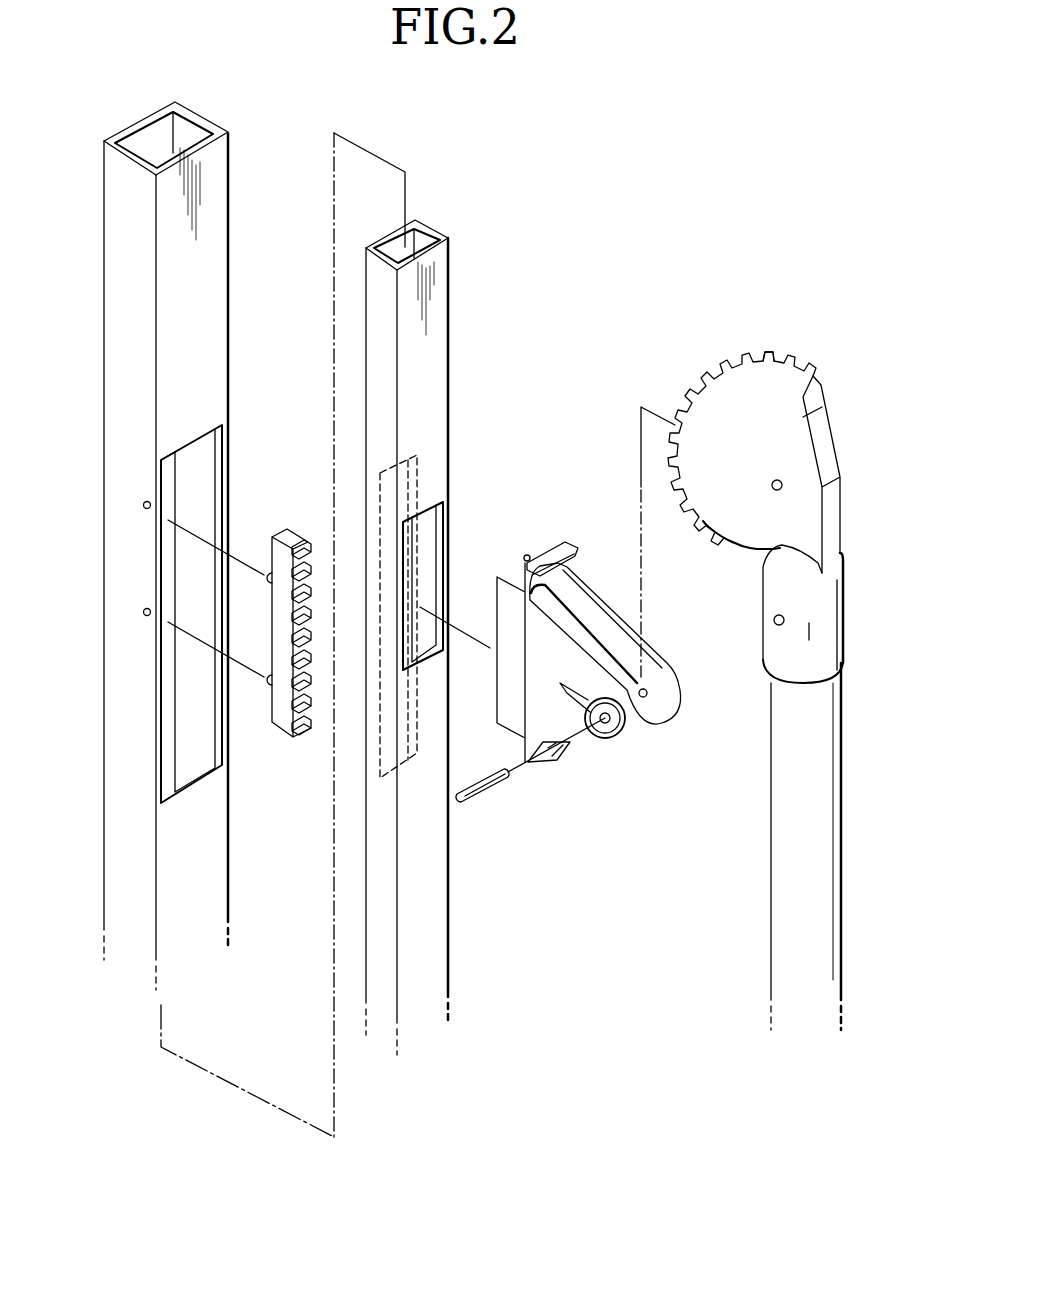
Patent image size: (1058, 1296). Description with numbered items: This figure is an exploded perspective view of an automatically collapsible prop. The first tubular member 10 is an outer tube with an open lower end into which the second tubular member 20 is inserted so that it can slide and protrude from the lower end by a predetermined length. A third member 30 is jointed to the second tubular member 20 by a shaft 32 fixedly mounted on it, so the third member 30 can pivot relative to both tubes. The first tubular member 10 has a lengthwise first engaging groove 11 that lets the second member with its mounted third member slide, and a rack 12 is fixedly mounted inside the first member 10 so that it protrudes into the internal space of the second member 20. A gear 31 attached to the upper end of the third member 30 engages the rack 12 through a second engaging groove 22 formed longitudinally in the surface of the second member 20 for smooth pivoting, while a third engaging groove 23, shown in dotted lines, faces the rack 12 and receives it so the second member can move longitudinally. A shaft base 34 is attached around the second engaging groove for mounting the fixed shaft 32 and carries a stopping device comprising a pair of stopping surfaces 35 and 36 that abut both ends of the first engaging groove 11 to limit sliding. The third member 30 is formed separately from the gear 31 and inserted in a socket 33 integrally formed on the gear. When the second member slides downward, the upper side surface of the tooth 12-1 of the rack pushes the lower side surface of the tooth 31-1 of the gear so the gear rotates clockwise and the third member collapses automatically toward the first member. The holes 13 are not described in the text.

The first tubular member 10 is at (233, 247).
The first engaging groove 11 is at (220, 455).
The rack 12 is at (295, 635).
The tooth of the rack 12-1 is at (308, 722).
The fixing holes 13 is at (140, 612).
The second tubular member 20 is at (452, 347).
The second engaging groove 22 is at (440, 511).
The third engaging groove 23 is at (382, 768).
The third member 30 is at (846, 853).
The gear 31 is at (797, 426).
The tooth of the gear 31-1 is at (783, 358).
The shaft 32 is at (488, 790).
The socket 33 is at (832, 625).
The shaft base 34 is at (598, 756).
The stopping surface 35 is at (553, 561).
The stopping surface 36 is at (557, 758).